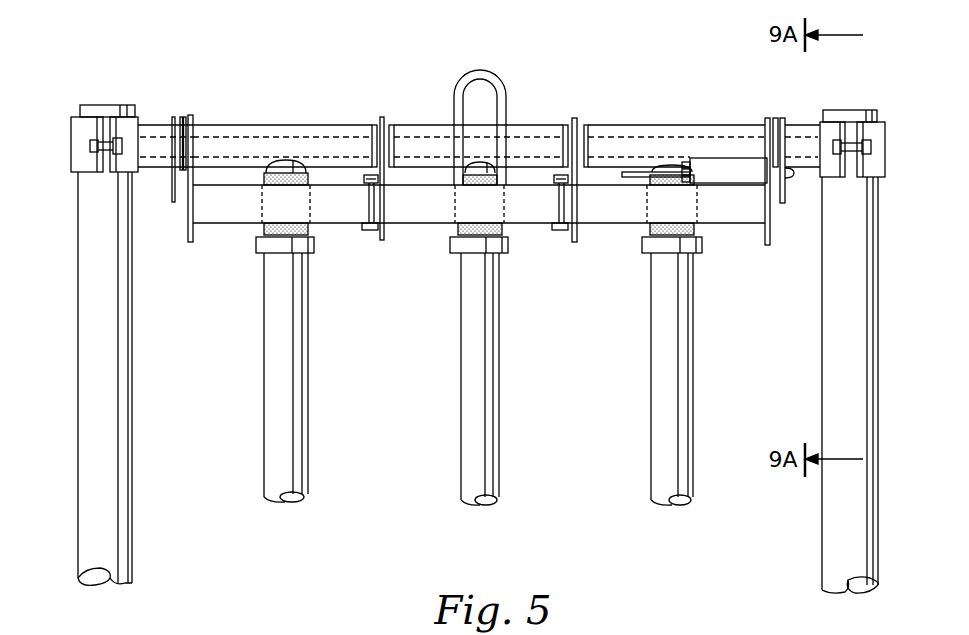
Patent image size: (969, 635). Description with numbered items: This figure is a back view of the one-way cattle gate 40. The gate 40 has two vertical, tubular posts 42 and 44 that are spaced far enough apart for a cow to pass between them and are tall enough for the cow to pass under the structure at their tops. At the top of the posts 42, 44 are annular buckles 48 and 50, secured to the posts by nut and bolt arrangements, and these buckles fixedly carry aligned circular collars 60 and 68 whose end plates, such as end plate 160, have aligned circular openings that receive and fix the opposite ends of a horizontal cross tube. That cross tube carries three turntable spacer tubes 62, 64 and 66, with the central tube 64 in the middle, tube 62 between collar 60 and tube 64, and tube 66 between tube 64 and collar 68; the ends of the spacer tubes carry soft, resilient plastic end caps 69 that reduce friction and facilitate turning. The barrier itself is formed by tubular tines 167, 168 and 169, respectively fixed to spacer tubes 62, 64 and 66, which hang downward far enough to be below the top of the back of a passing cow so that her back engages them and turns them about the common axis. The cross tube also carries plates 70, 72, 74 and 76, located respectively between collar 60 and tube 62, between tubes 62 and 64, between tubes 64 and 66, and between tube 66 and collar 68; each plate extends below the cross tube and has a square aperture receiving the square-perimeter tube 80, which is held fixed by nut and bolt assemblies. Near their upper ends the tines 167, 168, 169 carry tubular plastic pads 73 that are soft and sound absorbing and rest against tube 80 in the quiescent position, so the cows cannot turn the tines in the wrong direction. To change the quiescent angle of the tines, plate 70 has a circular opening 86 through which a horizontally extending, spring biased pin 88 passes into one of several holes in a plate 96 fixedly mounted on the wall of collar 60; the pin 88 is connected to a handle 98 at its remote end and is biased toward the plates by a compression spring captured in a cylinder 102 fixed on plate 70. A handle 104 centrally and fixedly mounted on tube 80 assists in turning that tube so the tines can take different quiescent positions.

The gate 40 is at (126, 72).
The vertical tubular post 42 is at (862, 325).
The vertical tubular post 44 is at (95, 298).
The annular buckle 48 is at (878, 135).
The annular buckle 50 is at (82, 125).
The circular collar 60 is at (806, 128).
The turntable spacer tube 62 is at (668, 125).
The turntable spacer tube 64 is at (423, 128).
The turntable spacer tube 66 is at (294, 125).
The circular collar 68 is at (153, 124).
The end cap 69 is at (205, 122).
The plate 70 is at (771, 120).
The plate 72 is at (576, 117).
The tubular plastic pad 73 is at (310, 235).
The plate 74 is at (381, 117).
The plate 76 is at (186, 120).
The tube 80 is at (617, 218).
The circular opening 86 is at (372, 235).
The spring biased pin 88 is at (792, 180).
The plate 96 is at (782, 180).
The handle 98 is at (637, 172).
The cylinder 102 is at (702, 158).
The handle 104 is at (476, 70).
The end plate 160 is at (781, 118).
The tubular tine 167 is at (665, 386).
The tubular tine 168 is at (473, 386).
The tubular tine 169 is at (282, 378).